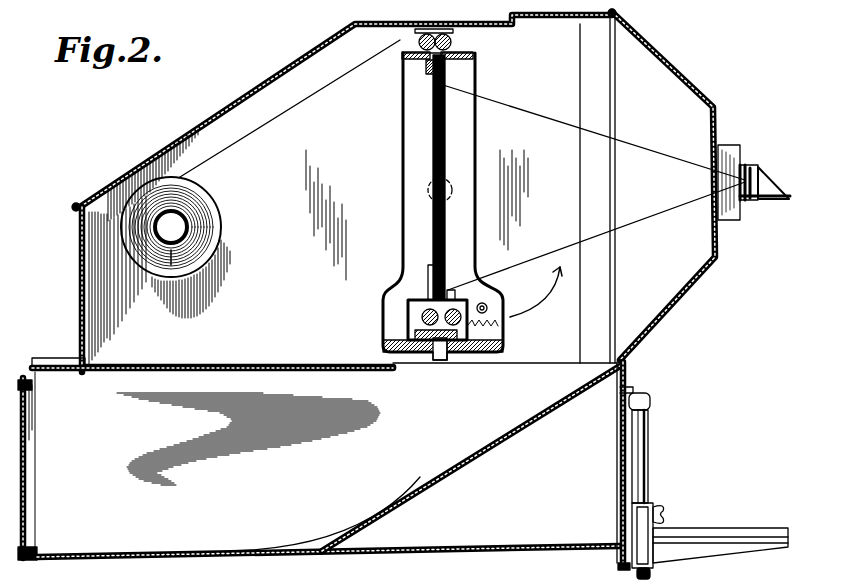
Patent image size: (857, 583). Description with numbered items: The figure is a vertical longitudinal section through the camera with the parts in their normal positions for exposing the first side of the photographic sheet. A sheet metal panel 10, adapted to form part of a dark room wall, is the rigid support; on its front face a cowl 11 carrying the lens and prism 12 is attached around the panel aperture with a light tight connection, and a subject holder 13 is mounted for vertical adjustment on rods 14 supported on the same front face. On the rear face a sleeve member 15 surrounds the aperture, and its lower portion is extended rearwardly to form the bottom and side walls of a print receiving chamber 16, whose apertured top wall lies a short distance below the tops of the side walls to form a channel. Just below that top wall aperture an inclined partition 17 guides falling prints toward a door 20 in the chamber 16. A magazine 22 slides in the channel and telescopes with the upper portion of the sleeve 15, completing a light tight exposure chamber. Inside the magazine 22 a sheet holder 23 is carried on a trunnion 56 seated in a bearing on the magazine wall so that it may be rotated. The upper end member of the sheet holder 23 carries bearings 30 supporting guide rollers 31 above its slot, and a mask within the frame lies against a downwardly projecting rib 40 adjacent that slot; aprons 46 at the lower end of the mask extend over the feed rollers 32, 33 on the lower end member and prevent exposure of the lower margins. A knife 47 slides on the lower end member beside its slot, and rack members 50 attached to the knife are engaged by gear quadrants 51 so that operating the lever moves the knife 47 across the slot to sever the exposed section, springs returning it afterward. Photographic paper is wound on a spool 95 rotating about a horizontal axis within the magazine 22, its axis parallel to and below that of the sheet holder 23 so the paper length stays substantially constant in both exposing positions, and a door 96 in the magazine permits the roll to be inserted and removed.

The panel 10 is at (620, 487).
The cowl 11 is at (693, 86).
The lens and prism 12 is at (745, 165).
The subject holder 13 is at (707, 532).
The rods 14 is at (648, 445).
The sleeve member 15 is at (590, 17).
The print receiving chamber 16 is at (193, 552).
The inclined partition 17 is at (508, 438).
The door 20 is at (27, 520).
The magazine 22 is at (78, 287).
The sheet holder 23 is at (405, 112).
The bearings 30 is at (417, 35).
The guide rollers 31 is at (455, 37).
The feed roller 32 is at (475, 347).
The feed roller 33 is at (415, 327).
The rib 40 is at (425, 67).
The aprons 46 is at (413, 300).
The knife 47 is at (457, 352).
The rack members 50 is at (490, 333).
The gear quadrants 51 is at (497, 327).
The trunnion 56 is at (455, 190).
The spool 95 is at (213, 213).
The door 96 is at (242, 104).